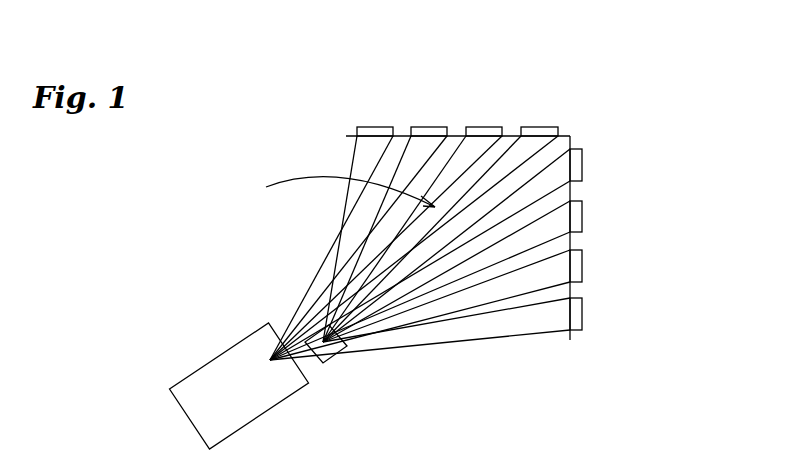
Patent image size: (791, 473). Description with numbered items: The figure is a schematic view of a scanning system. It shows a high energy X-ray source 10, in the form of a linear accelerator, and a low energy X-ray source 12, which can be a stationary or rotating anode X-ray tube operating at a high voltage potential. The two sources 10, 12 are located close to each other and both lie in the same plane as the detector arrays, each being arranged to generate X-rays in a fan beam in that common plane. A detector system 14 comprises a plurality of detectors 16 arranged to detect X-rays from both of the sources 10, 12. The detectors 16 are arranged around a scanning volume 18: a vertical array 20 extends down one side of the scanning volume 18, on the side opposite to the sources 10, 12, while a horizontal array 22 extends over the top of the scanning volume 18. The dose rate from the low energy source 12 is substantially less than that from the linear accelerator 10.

The high energy X-ray source 10 is at (202, 388).
The low energy X-ray source 12 is at (332, 348).
The detector system 14 is at (563, 197).
The detectors 16 is at (373, 131).
The scanning volume 18 is at (333, 189).
The vertical array 20 is at (576, 265).
The horizontal array 22 is at (452, 136).